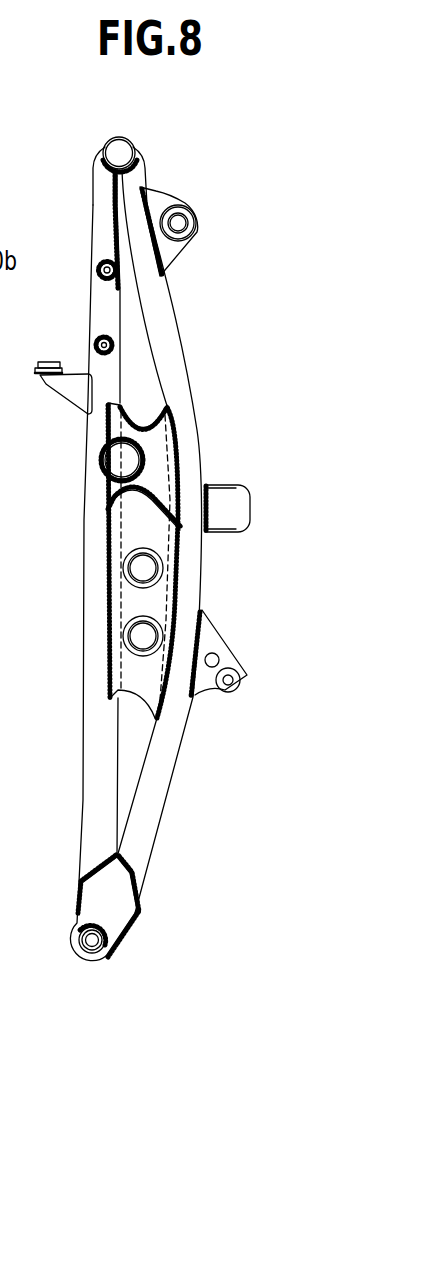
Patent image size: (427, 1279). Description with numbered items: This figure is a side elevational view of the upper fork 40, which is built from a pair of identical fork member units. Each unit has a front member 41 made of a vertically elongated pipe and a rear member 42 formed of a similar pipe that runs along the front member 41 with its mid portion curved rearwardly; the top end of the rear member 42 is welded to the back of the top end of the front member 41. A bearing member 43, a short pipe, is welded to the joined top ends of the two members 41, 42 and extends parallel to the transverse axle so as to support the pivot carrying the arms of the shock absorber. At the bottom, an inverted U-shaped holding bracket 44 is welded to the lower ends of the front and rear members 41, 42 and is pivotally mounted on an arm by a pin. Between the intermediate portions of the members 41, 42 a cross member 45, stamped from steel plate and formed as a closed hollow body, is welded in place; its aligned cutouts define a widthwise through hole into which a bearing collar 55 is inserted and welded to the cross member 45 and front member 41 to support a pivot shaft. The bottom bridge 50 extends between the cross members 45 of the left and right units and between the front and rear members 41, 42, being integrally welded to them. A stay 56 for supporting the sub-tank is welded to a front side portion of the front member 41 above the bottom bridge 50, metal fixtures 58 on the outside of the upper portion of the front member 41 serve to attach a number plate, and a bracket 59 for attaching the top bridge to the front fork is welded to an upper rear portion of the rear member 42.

The upper fork 40 is at (158, 539).
The front member 41 is at (92, 605).
The rear member 42 is at (183, 395).
The bearing member 43 is at (128, 138).
The holding bracket 44 is at (115, 917).
The cross member 45 is at (138, 508).
The bottom bridge 50 is at (235, 505).
The bearing collar 55 is at (110, 463).
The stay 56 is at (57, 388).
The metal fixtures 58 is at (101, 340).
The bracket 59 is at (157, 207).